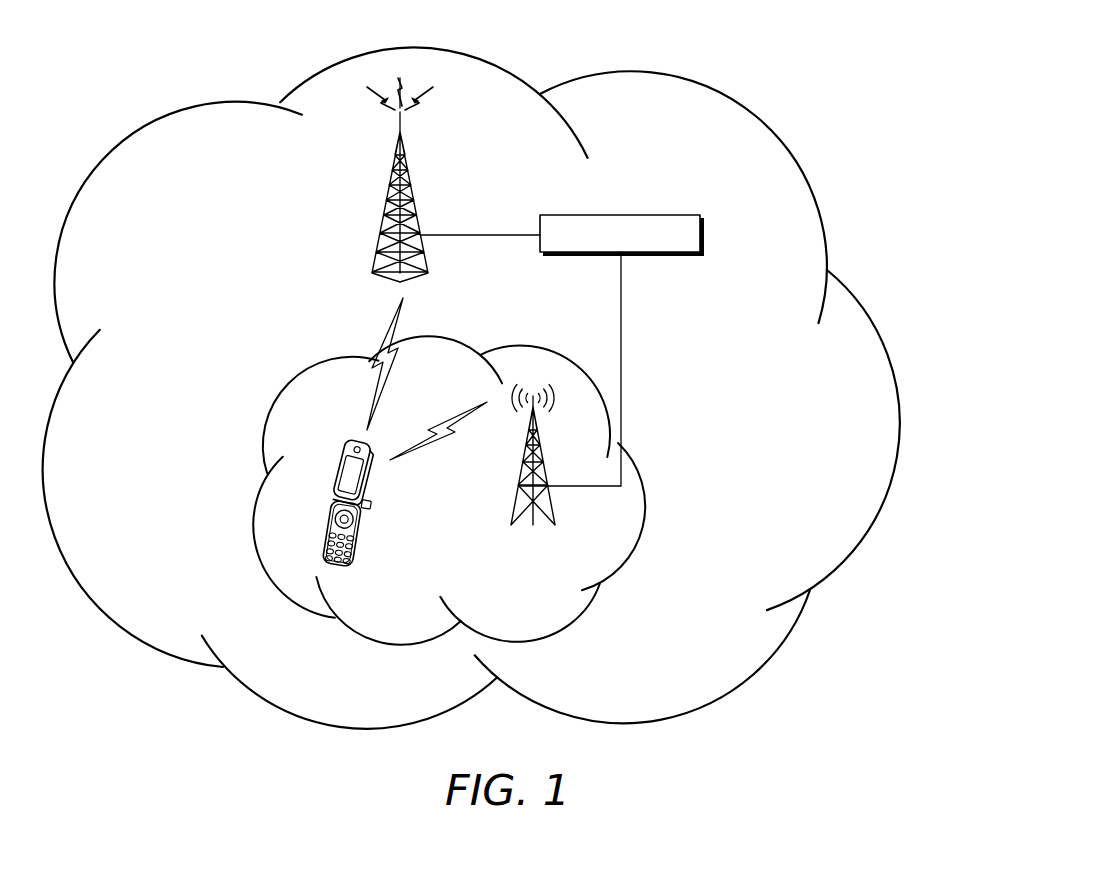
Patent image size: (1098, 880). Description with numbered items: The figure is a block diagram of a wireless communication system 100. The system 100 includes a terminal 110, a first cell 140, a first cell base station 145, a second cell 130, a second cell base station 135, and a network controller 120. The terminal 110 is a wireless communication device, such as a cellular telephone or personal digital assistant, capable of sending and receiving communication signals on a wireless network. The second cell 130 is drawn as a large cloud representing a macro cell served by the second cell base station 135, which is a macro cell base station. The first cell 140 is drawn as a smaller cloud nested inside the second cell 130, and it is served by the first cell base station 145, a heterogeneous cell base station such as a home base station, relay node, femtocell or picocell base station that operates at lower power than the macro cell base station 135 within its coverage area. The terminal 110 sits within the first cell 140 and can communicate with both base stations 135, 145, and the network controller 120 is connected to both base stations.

The system 100 is at (967, 92).
The terminal 110 is at (334, 521).
The network controller 120 is at (688, 215).
The second cell 130 is at (697, 82).
The second cell base station 135 is at (380, 237).
The first cell 140 is at (512, 344).
The first cell base station 145 is at (513, 507).